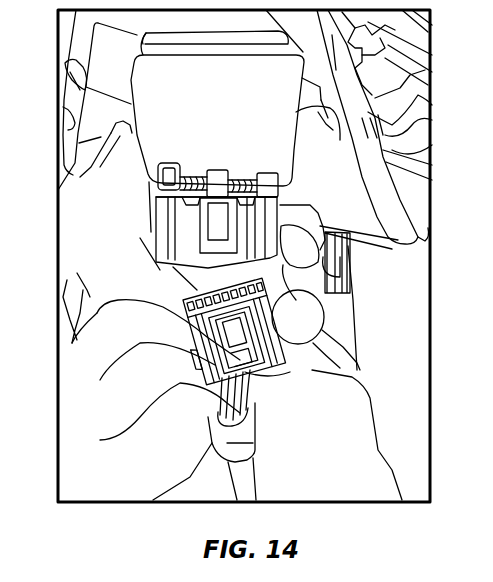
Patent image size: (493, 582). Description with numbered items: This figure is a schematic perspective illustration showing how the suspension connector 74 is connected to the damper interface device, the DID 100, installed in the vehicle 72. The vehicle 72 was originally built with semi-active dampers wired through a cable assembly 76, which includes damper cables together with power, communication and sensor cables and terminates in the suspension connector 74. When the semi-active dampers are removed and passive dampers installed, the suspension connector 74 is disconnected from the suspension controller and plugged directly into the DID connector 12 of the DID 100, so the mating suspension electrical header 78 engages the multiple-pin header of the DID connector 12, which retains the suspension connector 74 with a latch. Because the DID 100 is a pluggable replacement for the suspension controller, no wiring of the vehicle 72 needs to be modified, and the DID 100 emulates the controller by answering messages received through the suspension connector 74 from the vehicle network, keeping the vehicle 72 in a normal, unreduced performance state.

The vehicle 72 is at (37, 82).
The DID connector 12 is at (155, 231).
The DID 100 is at (128, 254).
The suspension electrical header 78 is at (88, 335).
The suspension connector 74 is at (100, 380).
The cable assembly 76 is at (100, 440).